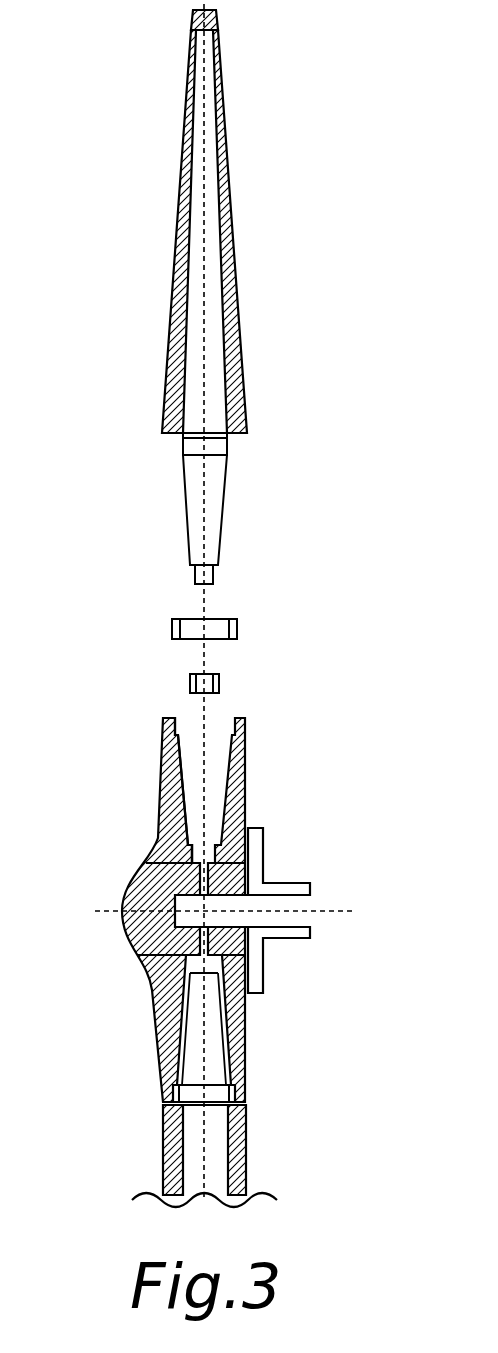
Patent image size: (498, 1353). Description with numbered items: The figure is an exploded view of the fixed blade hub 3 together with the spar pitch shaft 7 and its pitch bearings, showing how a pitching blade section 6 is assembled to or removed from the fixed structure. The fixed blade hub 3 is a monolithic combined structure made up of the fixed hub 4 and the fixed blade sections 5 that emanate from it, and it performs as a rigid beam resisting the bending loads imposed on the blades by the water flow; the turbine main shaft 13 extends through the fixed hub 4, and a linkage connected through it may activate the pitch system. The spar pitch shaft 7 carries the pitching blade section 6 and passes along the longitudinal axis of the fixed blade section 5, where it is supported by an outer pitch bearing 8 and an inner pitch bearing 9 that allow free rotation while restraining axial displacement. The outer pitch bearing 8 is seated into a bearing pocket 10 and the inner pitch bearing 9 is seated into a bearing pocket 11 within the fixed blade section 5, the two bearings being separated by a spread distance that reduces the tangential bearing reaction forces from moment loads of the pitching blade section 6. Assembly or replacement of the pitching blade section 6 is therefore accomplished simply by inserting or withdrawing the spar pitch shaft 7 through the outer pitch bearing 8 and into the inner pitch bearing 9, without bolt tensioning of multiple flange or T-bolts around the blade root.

The fixed blade hub 3 is at (77, 720).
The fixed hub 4 is at (138, 950).
The fixed blade section 5 is at (247, 818).
The pitching blade section 6 is at (243, 350).
The spar pitch shaft 7 is at (237, 227).
The outer pitch bearing 8 is at (240, 628).
The inner pitch bearing 9 is at (220, 683).
The bearing pocket 10 is at (247, 728).
The bearing pocket 11 is at (188, 853).
The turbine main shaft 13 is at (292, 938).